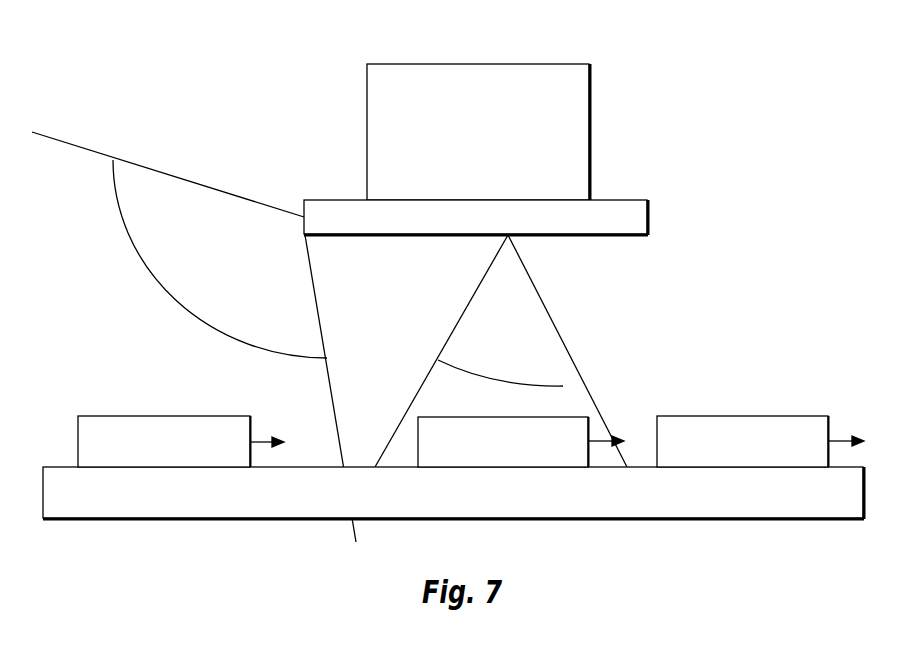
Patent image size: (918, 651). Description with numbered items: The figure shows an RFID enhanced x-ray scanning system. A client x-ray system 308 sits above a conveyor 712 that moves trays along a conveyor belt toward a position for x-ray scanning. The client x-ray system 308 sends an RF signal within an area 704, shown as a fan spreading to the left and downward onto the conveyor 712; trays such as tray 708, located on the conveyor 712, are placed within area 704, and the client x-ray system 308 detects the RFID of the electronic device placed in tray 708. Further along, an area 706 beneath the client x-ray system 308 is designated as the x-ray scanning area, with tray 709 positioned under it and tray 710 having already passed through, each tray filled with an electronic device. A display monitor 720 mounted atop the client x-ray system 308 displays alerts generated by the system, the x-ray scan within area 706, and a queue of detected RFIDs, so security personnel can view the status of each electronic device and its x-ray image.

The display monitor 720 is at (478, 132).
The client x-ray system 308 is at (476, 217).
The area 704 is at (177, 303).
The area 706 is at (563, 386).
The tray 708 is at (181, 441).
The tray 709 is at (521, 442).
The tray 710 is at (760, 441).
The conveyor 712 is at (453, 493).